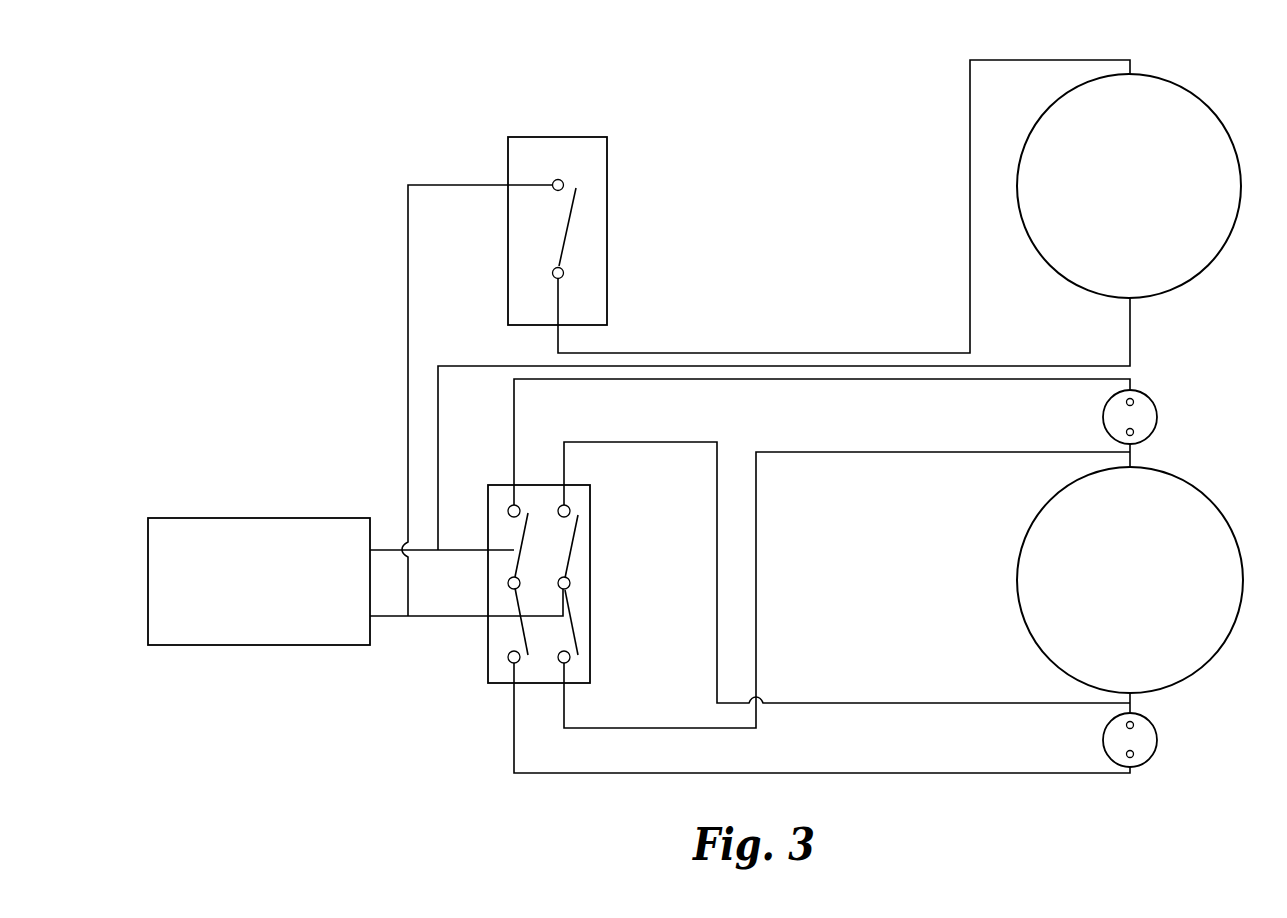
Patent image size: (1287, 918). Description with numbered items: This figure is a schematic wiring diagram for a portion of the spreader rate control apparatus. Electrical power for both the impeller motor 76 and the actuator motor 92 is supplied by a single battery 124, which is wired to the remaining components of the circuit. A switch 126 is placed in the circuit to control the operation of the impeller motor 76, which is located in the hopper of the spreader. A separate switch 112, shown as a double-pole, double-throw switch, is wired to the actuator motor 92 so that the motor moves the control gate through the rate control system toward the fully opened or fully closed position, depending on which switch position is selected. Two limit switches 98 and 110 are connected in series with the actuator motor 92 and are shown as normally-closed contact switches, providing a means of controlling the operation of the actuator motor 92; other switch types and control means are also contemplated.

The motor 76 is at (1030, 238).
The actuator motor 92 is at (1017, 607).
The limit switch 98 is at (1150, 395).
The limit switch 110 is at (1157, 747).
The switch 112 is at (592, 600).
The battery 124 is at (300, 518).
The switch 126 is at (544, 137).